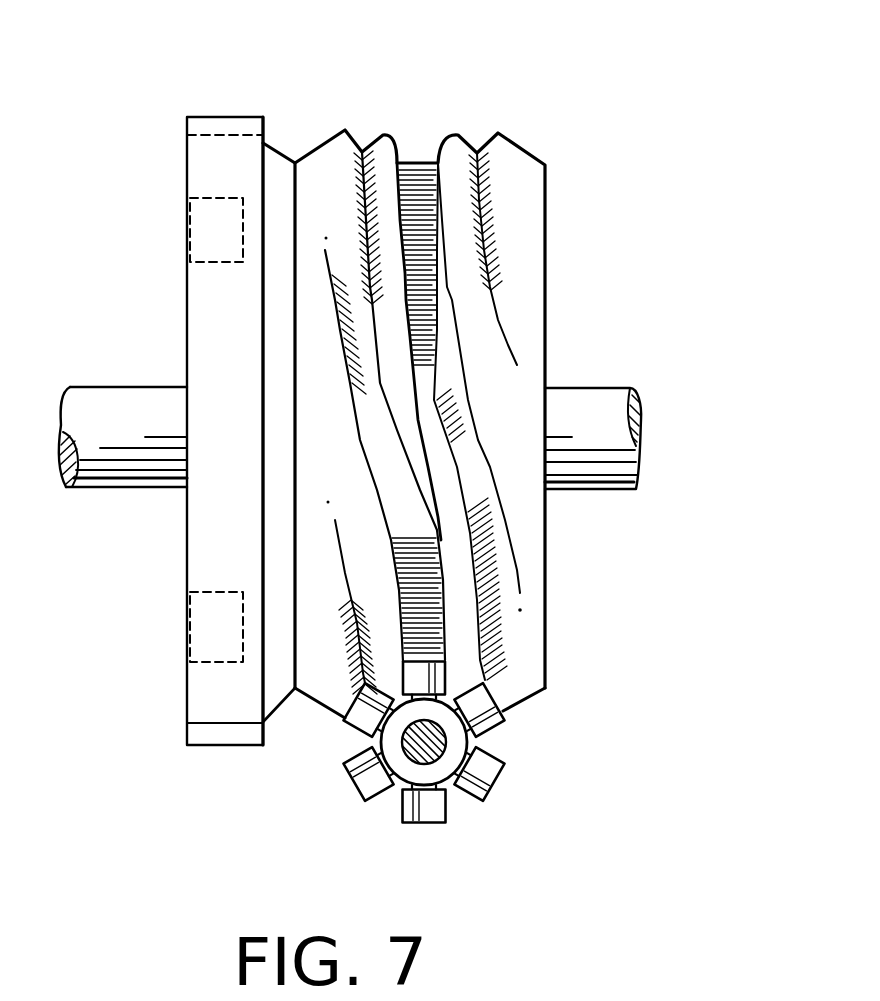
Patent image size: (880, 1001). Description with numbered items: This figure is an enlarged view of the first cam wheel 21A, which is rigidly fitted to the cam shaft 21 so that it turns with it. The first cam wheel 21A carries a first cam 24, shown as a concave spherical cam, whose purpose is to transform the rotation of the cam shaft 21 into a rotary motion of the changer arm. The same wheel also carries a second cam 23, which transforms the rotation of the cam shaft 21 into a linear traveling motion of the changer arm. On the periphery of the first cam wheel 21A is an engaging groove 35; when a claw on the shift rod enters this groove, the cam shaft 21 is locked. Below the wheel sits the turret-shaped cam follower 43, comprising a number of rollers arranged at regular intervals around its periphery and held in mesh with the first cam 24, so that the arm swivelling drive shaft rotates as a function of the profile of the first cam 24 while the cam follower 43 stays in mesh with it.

The cam shaft 21 is at (593, 398).
The first cam wheel 21A is at (562, 248).
The second cam 23 is at (223, 200).
The first cam 24 is at (412, 163).
The engaging groove 35 is at (219, 117).
The cam follower 43 is at (492, 778).